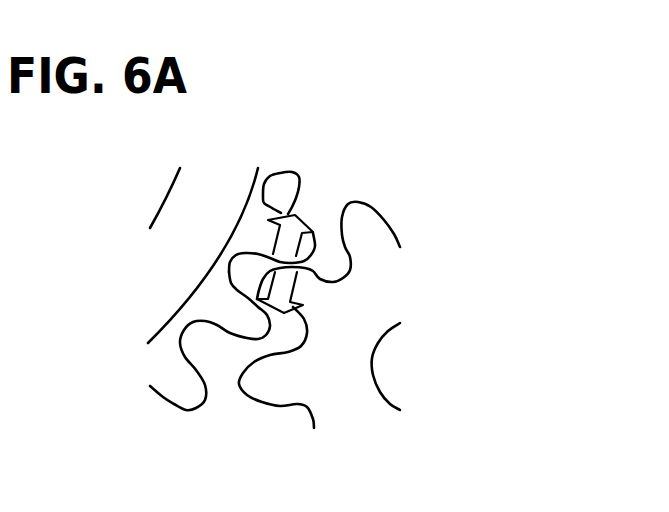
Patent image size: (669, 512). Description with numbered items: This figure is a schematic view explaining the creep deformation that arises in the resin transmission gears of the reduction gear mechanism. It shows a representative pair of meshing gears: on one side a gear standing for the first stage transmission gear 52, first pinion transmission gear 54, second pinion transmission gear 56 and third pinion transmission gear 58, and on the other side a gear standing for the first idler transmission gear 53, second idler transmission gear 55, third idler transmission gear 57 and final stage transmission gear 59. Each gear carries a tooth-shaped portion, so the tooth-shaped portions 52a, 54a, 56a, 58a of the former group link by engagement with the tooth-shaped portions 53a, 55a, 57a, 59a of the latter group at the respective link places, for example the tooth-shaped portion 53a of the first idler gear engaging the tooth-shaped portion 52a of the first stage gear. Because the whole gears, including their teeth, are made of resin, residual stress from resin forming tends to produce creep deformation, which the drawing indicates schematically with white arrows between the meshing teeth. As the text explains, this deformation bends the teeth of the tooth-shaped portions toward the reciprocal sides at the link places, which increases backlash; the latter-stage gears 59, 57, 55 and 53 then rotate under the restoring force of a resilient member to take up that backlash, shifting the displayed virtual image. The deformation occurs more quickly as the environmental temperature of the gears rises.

The first stage transmission gear 52 is at (436, 338).
The first pinion transmission gear 54 is at (436, 338).
The second pinion transmission gear 56 is at (436, 338).
The third pinion transmission gear 58 is at (436, 338).
The first idler transmission gear 53 is at (351, 312).
The second idler transmission gear 55 is at (351, 312).
The third idler transmission gear 57 is at (351, 312).
The final stage transmission gear 59 is at (351, 312).
The tooth-shaped portion 52a is at (436, 248).
The tooth-shaped portion 54a is at (436, 248).
The tooth-shaped portion 56a is at (436, 248).
The tooth-shaped portion 58a is at (315, 277).
The tooth-shaped portion 53a is at (430, 178).
The tooth-shaped portion 55a is at (430, 178).
The tooth-shaped portion 57a is at (430, 178).
The tooth-shaped portion 59a is at (272, 194).